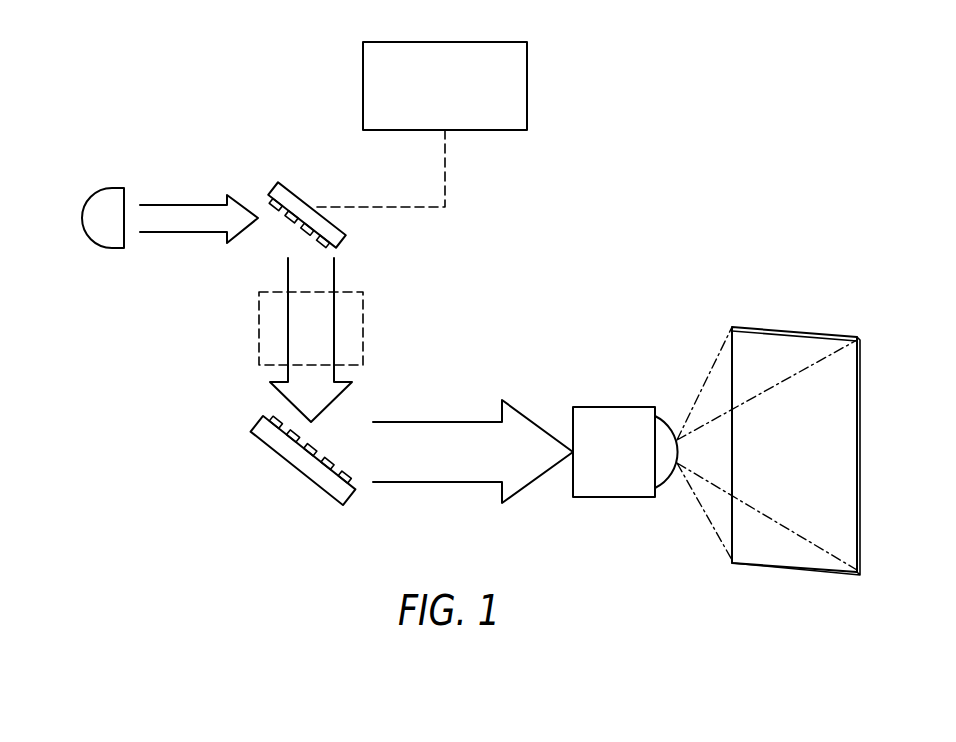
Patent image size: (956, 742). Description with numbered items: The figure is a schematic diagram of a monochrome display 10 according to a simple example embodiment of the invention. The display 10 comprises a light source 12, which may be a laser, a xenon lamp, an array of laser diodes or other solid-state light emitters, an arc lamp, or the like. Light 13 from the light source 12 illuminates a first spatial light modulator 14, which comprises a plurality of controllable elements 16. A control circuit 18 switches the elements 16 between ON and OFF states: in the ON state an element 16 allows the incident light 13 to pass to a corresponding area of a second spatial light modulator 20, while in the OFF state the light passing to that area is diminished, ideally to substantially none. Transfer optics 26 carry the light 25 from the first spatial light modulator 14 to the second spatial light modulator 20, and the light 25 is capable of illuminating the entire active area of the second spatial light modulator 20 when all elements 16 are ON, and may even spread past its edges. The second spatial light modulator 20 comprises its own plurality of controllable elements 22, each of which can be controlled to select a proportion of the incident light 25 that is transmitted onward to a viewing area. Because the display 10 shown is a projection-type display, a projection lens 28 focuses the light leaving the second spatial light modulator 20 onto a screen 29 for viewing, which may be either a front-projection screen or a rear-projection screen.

The monochrome display 10 is at (132, 140).
The light source 12 is at (108, 228).
The light 13 is at (185, 220).
The first spatial light modulator 14 is at (298, 203).
The controllable elements 16 is at (272, 197).
The control circuit 18 is at (467, 42).
The second spatial light modulator 20 is at (273, 438).
The controllable elements 22 is at (347, 467).
The light 25 is at (325, 395).
The transfer optics 26 is at (363, 305).
The projection lens 28 is at (615, 482).
The screen 29 is at (792, 327).